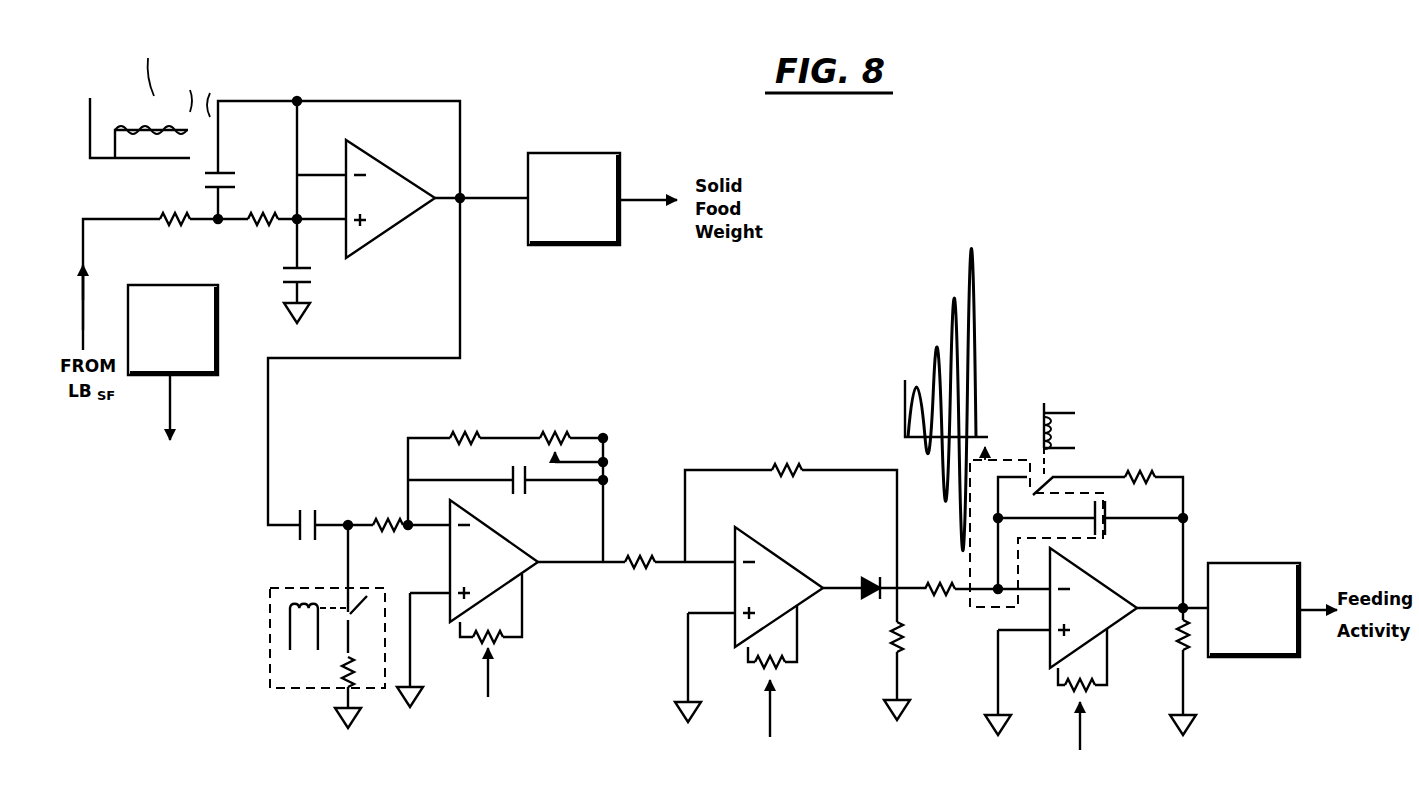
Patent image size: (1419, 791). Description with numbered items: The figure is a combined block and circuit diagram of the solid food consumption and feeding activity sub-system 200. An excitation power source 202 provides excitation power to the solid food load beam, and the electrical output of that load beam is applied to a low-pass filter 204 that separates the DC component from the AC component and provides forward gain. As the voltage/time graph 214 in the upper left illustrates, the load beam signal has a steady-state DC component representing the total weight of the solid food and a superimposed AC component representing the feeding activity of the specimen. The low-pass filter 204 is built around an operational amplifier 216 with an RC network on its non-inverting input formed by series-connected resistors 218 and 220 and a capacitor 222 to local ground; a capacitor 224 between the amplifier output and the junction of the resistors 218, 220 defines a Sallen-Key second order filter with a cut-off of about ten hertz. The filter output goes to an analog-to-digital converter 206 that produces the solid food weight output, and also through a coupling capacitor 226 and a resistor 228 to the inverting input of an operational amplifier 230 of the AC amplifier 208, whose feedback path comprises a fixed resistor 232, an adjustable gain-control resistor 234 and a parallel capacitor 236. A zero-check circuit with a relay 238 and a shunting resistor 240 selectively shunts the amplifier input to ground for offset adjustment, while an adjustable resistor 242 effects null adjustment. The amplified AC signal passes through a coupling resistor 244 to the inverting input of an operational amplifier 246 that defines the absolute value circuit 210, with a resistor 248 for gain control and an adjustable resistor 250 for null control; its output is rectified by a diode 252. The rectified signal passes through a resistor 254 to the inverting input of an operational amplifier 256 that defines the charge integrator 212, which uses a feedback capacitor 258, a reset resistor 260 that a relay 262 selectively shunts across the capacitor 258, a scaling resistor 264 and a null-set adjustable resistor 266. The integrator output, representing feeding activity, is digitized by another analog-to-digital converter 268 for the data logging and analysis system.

The food consumption and feeding activity sub-system 200 is at (1051, 317).
The excitation power source 202 is at (196, 377).
The low-pass filter 204 is at (423, 151).
The analog-to-digital converter 206 is at (553, 247).
The AC amplifier 208 is at (430, 554).
The absolute value circuit 210 is at (819, 564).
The integrator 212 is at (1055, 499).
The voltage/time graph 214 is at (218, 62).
The operational amplifier 216 is at (385, 159).
The resistor 218 is at (170, 226).
The resistor 220 is at (263, 226).
The capacitor 222 is at (312, 281).
The capacitor 224 is at (228, 172).
The coupling capacitor 226 is at (322, 510).
The resistor 228 is at (385, 530).
The operational amplifier 230 is at (517, 535).
The fixed resistor 232 is at (465, 431).
The adjustable gain-control resistor 234 is at (555, 431).
The capacitor 236 is at (510, 470).
The relay 238 is at (292, 626).
The shunting resistor 240 is at (340, 666).
The adjustable resistor 242 is at (498, 640).
The coupling resistor 244 is at (640, 570).
The operational amplifier 246 is at (775, 553).
The resistor 248 is at (786, 478).
The adjustable resistor 250 is at (783, 668).
The rectifying diode 252 is at (870, 575).
The resistor 254 is at (940, 600).
The operational amplifier 256 is at (1108, 588).
The capacitor 258 is at (1108, 525).
The resistor 260 is at (1153, 476).
The relay 262 is at (1061, 404).
The resistor 264 is at (1178, 641).
The adjustable resistor 266 is at (1092, 695).
The analog-to-digital converter 268 is at (1284, 541).